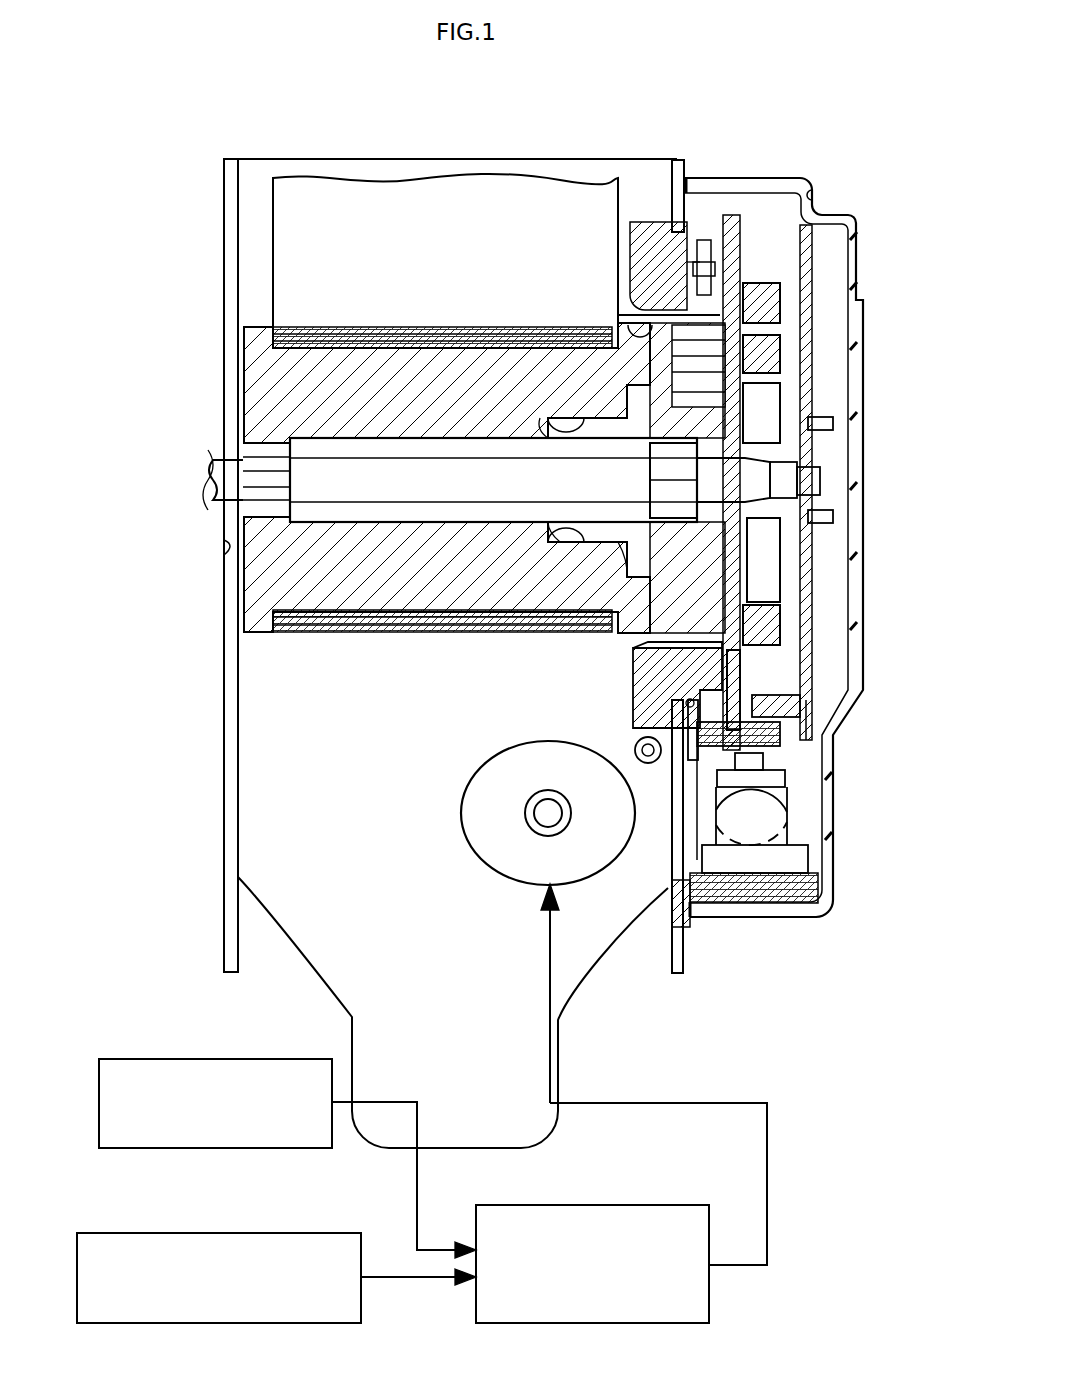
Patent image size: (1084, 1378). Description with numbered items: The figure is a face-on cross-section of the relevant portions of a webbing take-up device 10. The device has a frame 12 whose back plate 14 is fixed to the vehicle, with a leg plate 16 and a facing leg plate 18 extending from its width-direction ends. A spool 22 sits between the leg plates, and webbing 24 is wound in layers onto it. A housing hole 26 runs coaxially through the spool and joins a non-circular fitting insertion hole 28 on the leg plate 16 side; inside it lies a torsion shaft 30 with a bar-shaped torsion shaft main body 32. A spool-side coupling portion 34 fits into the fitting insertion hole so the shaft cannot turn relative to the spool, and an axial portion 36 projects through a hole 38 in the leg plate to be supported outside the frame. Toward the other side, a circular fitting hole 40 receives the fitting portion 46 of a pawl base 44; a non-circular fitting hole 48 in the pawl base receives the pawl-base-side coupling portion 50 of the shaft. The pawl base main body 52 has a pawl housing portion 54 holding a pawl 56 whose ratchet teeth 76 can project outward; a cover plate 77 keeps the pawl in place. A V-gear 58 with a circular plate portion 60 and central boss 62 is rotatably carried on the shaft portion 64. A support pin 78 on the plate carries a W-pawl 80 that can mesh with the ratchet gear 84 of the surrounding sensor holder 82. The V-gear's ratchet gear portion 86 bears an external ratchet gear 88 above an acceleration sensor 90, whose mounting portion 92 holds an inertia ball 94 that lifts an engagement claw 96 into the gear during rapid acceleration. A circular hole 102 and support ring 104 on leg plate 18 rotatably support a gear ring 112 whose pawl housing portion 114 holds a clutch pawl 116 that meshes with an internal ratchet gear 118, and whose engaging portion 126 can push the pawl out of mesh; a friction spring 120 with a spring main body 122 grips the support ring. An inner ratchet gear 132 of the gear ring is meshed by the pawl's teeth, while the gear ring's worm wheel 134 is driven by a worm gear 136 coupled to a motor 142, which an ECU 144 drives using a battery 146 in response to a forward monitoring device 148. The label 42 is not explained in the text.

The webbing take-up device 10 is at (240, 150).
The frame 12 is at (225, 890).
The back plate 14 is at (312, 952).
The leg plate 16 is at (230, 786).
The leg plate 18 is at (672, 960).
The spool 22 is at (342, 612).
The webbing 24 is at (300, 250).
The housing hole 26 is at (375, 466).
The fitting insertion hole 28 is at (248, 450).
The torsion shaft 30 is at (322, 442).
The torsion shaft main body 32 is at (328, 506).
The spool-side coupling portion 34 is at (258, 504).
The axial portion 36 is at (224, 490).
The hole 38 is at (240, 552).
The fitting hole 40 is at (566, 424).
The housing 42 is at (818, 212).
The pawl base 44 is at (600, 556).
The fitting portion 46 is at (548, 548).
The fitting hole 48 is at (540, 442).
The pawl-base-side coupling portion 50 is at (656, 482).
The pawl base main body 52 is at (652, 585).
The pawl housing portion 54 is at (835, 450).
The pawl 56 is at (720, 382).
The V-gear 58 is at (805, 700).
The circular plate portion 60 is at (745, 682).
The boss 62 is at (800, 540).
The shaft portion 64 is at (790, 478).
The ratchet teeth 76 is at (770, 300).
The cover plate 77 is at (770, 575).
The support pin 78 is at (772, 350).
The W-pawl 80 is at (760, 606).
The sensor holder 82 is at (805, 712).
The ratchet gear 84 is at (790, 740).
The ratchet gear portion 86 is at (670, 770).
The ratchet gear 88 is at (695, 760).
The acceleration sensor 90 is at (806, 826).
The mounting portion 92 is at (808, 860).
The inertia ball 94 is at (790, 820).
The engagement claw 96 is at (780, 768).
The circular hole 102 is at (712, 300).
The support ring 104 is at (665, 688).
The gear ring 112 is at (642, 195).
The pawl housing portion 114 is at (790, 292).
The clutch pawl 116 is at (702, 262).
The ratchet gear 118 is at (650, 656).
The friction spring 120 is at (688, 704).
The spring main body 122 is at (660, 262).
The engaging portion 126 is at (812, 195).
The ratchet gear 132 is at (628, 318).
The worm wheel 134 is at (695, 278).
The worm gear 136 is at (640, 752).
The motor 142 is at (462, 815).
The ECU 144 is at (680, 1205).
The battery 146 is at (134, 1059).
The forward monitoring device 148 is at (120, 1233).